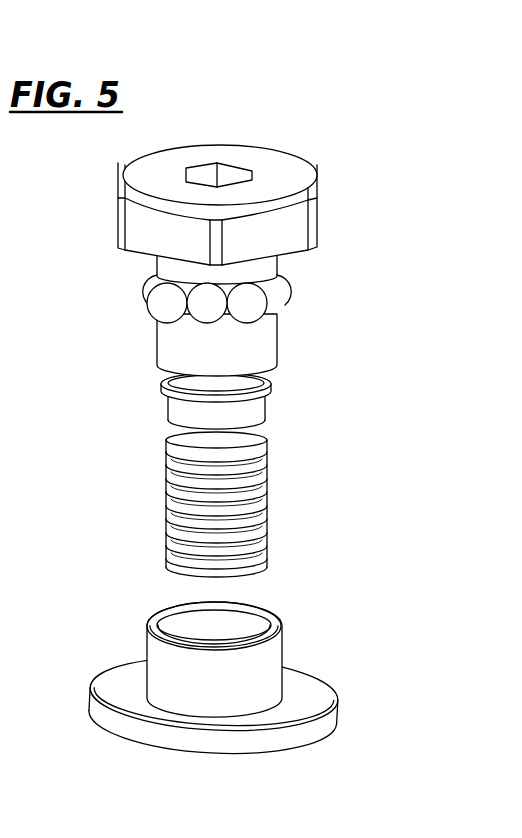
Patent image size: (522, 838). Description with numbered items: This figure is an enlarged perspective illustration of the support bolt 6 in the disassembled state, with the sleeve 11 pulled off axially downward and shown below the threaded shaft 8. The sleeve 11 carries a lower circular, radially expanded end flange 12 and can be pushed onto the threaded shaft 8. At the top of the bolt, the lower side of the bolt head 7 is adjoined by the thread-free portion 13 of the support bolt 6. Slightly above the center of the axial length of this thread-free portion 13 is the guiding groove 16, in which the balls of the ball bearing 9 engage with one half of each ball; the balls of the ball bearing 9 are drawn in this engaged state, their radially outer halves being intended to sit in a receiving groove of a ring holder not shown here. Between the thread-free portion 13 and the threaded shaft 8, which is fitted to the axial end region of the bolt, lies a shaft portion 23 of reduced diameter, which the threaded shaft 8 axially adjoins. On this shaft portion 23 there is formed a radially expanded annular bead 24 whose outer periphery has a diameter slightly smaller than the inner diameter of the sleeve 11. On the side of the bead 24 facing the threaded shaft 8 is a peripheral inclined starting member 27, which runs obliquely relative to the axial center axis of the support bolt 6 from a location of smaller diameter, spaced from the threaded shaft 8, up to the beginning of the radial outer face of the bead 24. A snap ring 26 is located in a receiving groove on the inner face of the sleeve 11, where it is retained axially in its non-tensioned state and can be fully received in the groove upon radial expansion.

The support bolt 6 is at (199, 288).
The bolt head 7 is at (269, 170).
The threaded shaft 8 is at (192, 487).
The ball bearing 9 is at (203, 309).
The sleeve 11 is at (206, 659).
The end flange 12 is at (122, 686).
The thread-free portion 13 is at (172, 338).
The guiding groove 16 is at (224, 322).
The shaft portion 23 is at (206, 434).
The annular bead 24 is at (257, 403).
The snap ring 26 is at (197, 395).
The inclined starting member 27 is at (223, 425).